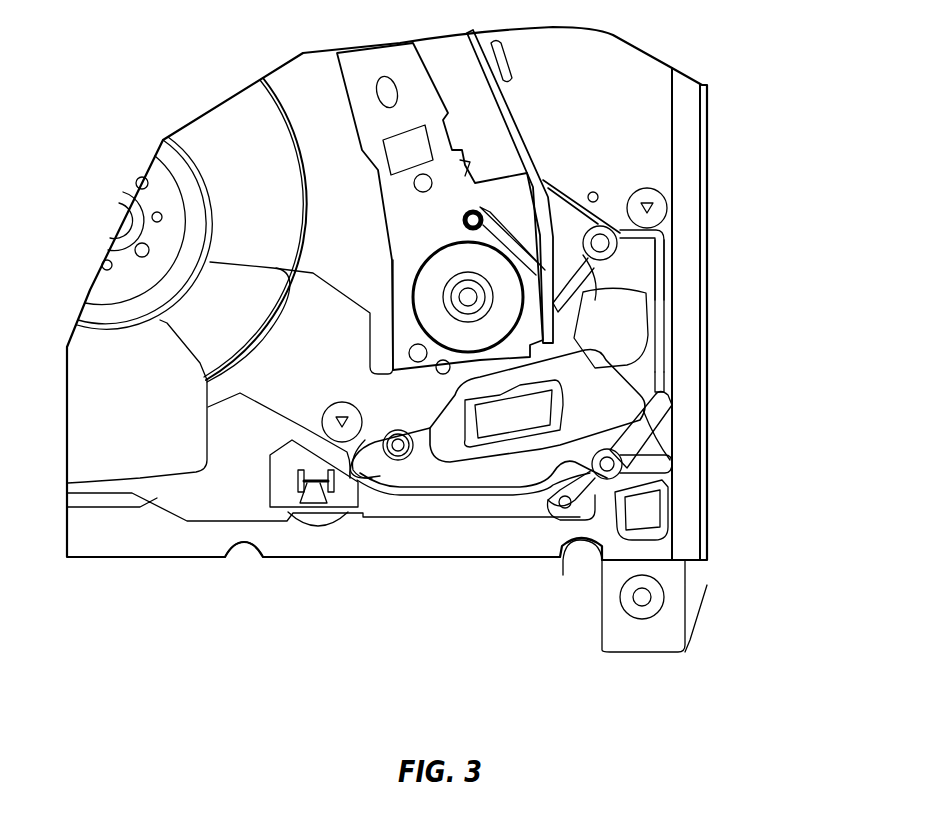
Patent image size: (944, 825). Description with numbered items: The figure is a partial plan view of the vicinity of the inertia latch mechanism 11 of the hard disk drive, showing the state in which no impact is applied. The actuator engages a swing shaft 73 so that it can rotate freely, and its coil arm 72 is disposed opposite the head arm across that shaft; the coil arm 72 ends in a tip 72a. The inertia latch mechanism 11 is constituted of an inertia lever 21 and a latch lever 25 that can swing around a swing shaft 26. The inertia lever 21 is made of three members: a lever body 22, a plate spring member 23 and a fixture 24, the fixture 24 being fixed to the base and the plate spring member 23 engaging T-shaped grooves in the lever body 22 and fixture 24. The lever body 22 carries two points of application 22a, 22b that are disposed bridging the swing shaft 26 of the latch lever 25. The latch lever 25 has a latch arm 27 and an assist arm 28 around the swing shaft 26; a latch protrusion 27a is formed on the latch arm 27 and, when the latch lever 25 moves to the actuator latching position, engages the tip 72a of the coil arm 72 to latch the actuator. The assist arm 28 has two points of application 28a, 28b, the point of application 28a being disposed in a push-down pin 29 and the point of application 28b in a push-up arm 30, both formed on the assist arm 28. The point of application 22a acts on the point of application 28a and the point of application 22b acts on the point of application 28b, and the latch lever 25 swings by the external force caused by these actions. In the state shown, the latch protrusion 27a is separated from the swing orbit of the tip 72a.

The inertia latch mechanism 11 is at (303, 440).
The inertia lever 21 is at (367, 511).
The lever body 22 is at (433, 503).
The point of application 22a is at (555, 500).
The point of application 22b is at (668, 490).
The plate spring member 23 is at (300, 480).
The fixture 24 is at (285, 462).
The latch lever 25 is at (673, 420).
The swing shaft 26 is at (600, 462).
The latch arm 27 is at (664, 385).
The latch protrusion 27a is at (673, 350).
The assist arm 28 is at (630, 527).
The point of application 28a is at (562, 520).
The point of application 28b is at (672, 470).
The push-down pin 29 is at (557, 510).
The push-up arm 30 is at (660, 432).
The coil arm 72 is at (579, 330).
The tip 72a is at (625, 395).
The swing shaft 73 is at (463, 297).